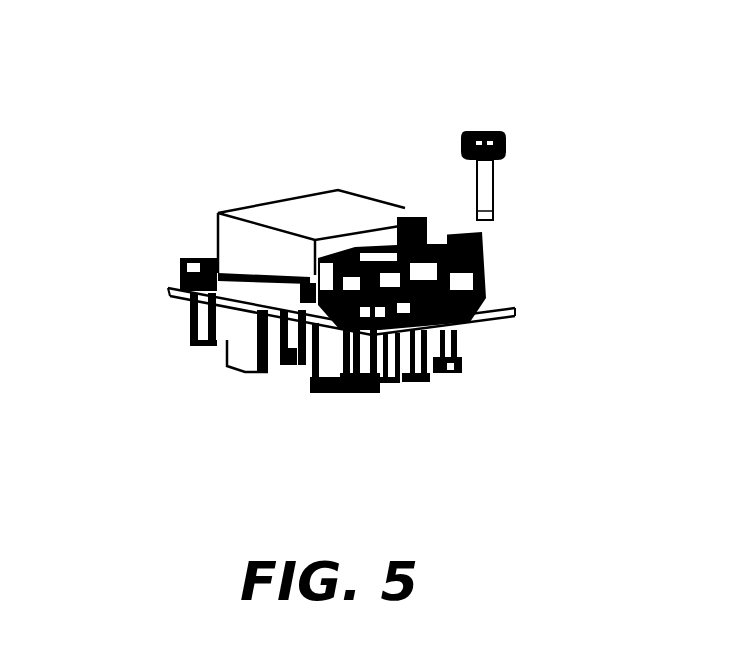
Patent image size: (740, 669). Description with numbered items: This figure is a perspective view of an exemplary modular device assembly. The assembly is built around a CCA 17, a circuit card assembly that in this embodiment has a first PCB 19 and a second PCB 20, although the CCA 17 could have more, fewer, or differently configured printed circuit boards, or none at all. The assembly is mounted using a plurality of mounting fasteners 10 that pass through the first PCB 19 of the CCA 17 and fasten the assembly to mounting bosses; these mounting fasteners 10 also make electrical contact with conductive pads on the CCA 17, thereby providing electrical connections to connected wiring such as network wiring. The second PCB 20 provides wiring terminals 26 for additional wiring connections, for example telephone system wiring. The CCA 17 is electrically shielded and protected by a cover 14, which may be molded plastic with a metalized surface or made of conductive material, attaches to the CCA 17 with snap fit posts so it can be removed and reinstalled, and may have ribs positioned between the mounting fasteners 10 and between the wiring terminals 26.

The CCA 17 is at (424, 80).
The cover 14 is at (308, 215).
The second PCB 20 is at (210, 255).
The first PCB 19 is at (173, 291).
The wiring terminals 26 is at (298, 290).
The mounting fasteners 10 is at (505, 155).